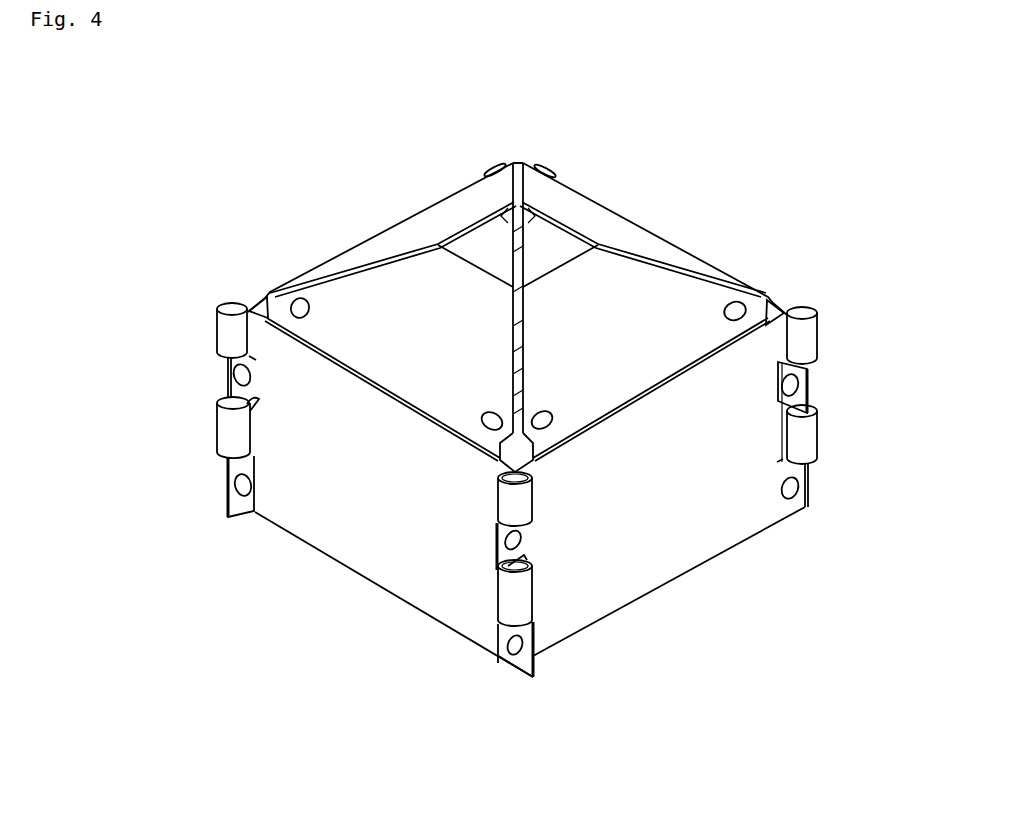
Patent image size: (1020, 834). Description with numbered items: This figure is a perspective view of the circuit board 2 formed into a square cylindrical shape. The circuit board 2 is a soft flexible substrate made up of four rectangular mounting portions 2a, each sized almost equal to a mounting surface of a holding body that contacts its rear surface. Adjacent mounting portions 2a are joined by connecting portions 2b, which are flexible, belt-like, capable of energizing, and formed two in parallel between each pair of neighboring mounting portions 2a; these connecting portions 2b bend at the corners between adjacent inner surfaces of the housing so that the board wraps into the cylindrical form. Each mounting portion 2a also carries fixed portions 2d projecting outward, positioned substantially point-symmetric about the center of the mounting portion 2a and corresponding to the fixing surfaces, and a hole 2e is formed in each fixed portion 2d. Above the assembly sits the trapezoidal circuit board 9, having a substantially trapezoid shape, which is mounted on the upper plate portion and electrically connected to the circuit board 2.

The circuit board 2 is at (507, 428).
The mounting portion 2a is at (378, 537).
The connecting portion 2b is at (217, 323).
The fixed portion 2d is at (227, 368).
The hole 2e is at (233, 377).
The trapezoidal circuit board 9 is at (372, 330).